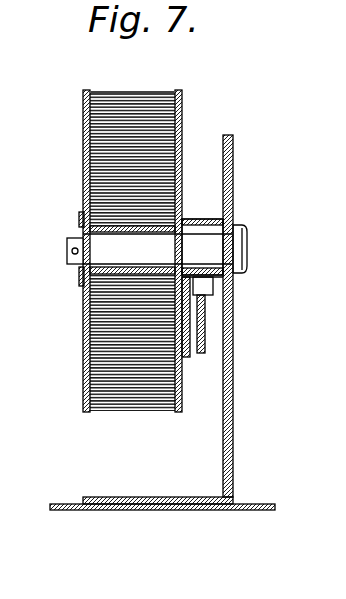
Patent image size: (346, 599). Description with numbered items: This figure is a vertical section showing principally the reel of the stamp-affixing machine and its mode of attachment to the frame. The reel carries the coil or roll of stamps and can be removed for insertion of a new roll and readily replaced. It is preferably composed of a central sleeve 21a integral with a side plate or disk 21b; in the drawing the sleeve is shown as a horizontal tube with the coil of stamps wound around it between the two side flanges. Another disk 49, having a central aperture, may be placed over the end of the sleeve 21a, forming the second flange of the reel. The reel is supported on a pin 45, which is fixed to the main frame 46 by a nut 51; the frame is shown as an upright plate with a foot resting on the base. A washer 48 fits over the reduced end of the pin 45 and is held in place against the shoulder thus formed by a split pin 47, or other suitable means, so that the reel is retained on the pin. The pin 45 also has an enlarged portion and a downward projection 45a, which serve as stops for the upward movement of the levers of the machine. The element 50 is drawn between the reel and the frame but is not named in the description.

The central sleeve 21a is at (117, 251).
The side plate or disk 21b is at (237, 98).
The pin 45 is at (82, 285).
The downward projection 45a is at (295, 295).
The main frame 46 is at (233, 328).
The split pin 47 is at (70, 252).
The washer 48 is at (79, 217).
The disk 49 is at (83, 99).
The bushing 50 is at (203, 224).
The nut 51 is at (248, 240).